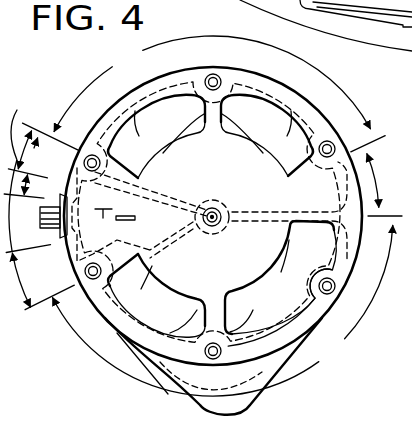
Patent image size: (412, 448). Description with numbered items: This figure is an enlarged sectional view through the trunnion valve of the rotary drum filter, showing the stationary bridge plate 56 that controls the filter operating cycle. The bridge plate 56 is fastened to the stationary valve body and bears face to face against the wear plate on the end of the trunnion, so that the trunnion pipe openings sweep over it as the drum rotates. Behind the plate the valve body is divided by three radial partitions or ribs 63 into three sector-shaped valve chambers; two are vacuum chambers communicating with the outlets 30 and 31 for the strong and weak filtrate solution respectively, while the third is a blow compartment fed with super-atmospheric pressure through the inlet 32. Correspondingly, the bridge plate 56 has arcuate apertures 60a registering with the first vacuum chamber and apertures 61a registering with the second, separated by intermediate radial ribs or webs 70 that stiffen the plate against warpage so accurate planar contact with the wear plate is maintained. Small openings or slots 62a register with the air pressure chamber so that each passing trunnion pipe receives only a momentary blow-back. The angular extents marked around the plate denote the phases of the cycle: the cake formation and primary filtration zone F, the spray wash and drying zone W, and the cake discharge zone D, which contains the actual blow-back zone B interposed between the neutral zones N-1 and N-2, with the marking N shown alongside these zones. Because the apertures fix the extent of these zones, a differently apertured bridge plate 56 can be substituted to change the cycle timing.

The bridge plate 56 is at (198, 188).
The apertures 61a is at (160, 162).
The arcuate apertures 60a is at (330, 269).
The outlet 31 is at (249, 139).
The outlet 30 is at (240, 322).
The intermediate radial ribs or webs 70 is at (229, 213).
The radial partitions or ribs 63 is at (232, 214).
The openings or slots 62a is at (124, 247).
The inlet 32 is at (54, 205).
The blow-back zone B is at (52, 215).
The spray wash and drying zone W is at (212, 83).
The cake discharge zone D is at (43, 169).
The neutral zone N-1 is at (35, 151).
The neutral zone N-2 is at (40, 277).
The dimension N is at (376, 176).
The cake formation and primary filtration zone F is at (223, 310).